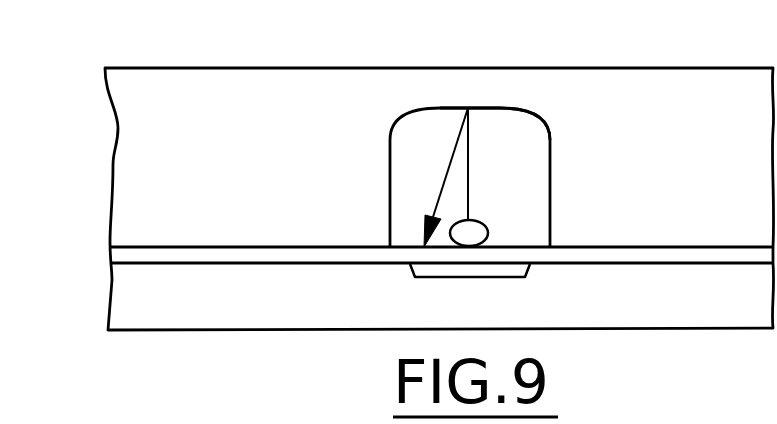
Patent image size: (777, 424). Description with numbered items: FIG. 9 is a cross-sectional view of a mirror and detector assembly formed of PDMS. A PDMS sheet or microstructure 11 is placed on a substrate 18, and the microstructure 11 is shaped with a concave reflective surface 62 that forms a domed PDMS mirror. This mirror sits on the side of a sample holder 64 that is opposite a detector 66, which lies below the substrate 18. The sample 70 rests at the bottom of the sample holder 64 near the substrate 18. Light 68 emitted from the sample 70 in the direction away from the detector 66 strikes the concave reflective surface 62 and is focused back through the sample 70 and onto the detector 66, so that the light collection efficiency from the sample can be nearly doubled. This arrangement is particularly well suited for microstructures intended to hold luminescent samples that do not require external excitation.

The microstructure 11 is at (125, 163).
The substrate 18 is at (125, 257).
The concave reflective surface 62 is at (503, 112).
The sample holder 64 is at (533, 188).
The detector 66 is at (530, 265).
The light 68 is at (450, 148).
The sample 70 is at (489, 237).